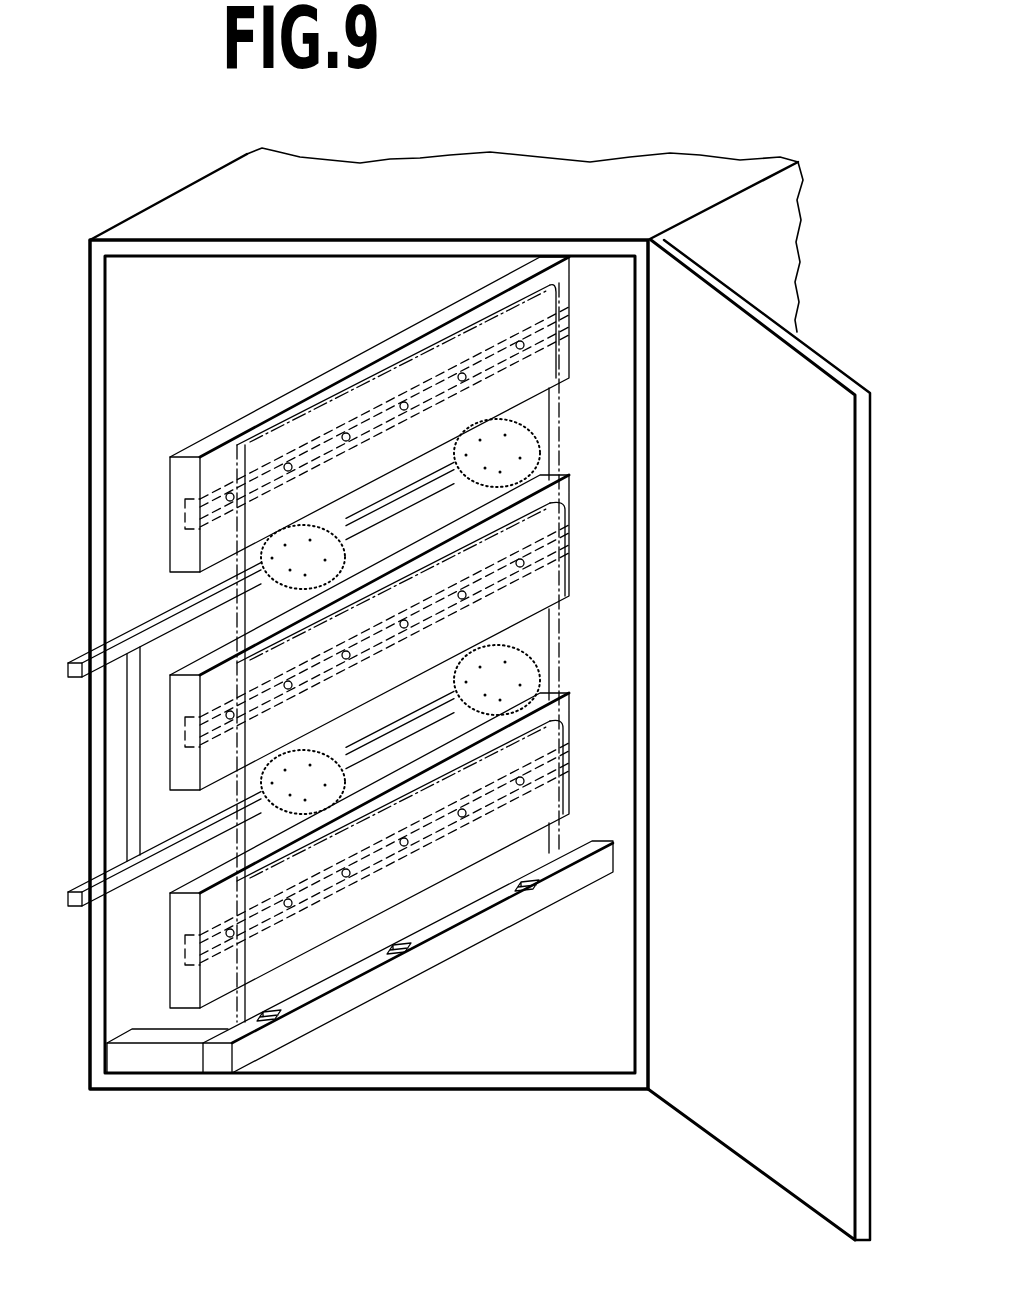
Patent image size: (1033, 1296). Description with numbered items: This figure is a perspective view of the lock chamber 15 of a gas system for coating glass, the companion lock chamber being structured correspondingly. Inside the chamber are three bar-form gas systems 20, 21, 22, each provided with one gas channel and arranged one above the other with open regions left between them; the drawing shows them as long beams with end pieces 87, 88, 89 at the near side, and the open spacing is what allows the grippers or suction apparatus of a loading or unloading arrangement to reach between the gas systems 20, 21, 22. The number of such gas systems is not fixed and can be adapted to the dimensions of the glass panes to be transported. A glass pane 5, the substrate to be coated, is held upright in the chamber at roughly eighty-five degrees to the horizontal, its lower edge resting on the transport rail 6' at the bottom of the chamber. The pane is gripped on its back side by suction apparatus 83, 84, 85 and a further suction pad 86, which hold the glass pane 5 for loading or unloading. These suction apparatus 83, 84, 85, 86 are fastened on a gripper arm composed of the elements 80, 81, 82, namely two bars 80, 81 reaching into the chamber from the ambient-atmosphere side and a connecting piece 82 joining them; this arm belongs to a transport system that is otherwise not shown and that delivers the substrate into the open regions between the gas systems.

The lock chamber 15 is at (583, 188).
The glass pane 5 is at (559, 637).
The bottom rail 6' is at (360, 987).
The bar-form gas system 20 is at (185, 510).
The bar-form gas system 21 is at (190, 730).
The bar-form gas system 22 is at (187, 948).
The gripper arm element 80 is at (70, 679).
The gripper arm element 81 is at (70, 908).
The gripper arm element 82 is at (147, 762).
The suction apparatus 83 is at (515, 452).
The suction apparatus 84 is at (330, 555).
The suction apparatus 85 is at (330, 780).
The pad 86 is at (520, 678).
The shelf beam 87 is at (192, 453).
The shelf beam 88 is at (223, 655).
The shelf beam 89 is at (188, 993).